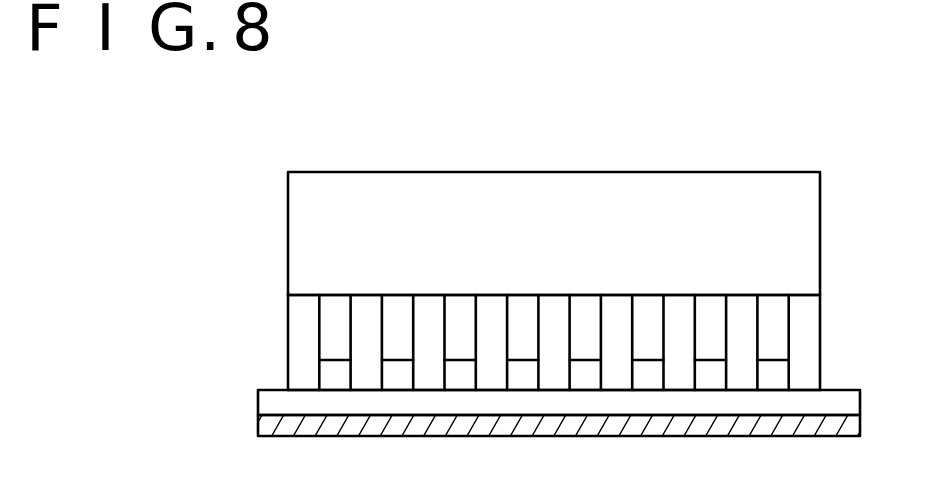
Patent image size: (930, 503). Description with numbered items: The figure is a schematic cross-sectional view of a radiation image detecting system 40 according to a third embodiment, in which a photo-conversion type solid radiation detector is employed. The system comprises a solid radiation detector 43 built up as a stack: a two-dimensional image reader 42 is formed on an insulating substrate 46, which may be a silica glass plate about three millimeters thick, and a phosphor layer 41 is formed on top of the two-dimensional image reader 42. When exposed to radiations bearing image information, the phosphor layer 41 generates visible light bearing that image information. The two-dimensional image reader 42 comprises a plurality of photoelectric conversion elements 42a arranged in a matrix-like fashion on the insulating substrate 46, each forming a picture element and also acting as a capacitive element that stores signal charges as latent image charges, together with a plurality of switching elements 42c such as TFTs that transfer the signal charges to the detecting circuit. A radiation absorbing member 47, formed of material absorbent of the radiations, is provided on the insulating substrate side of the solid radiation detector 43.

The radiation image detecting system 40 is at (128, 141).
The phosphor layer 41 is at (300, 209).
The two-dimensional image reader 42 is at (280, 295).
The photoelectric conversion element 42a is at (333, 305).
The switching element 42c is at (338, 367).
The solid radiation detector 43 is at (178, 405).
The insulating substrate 46 is at (258, 404).
The radiation absorbing member 47 is at (258, 425).